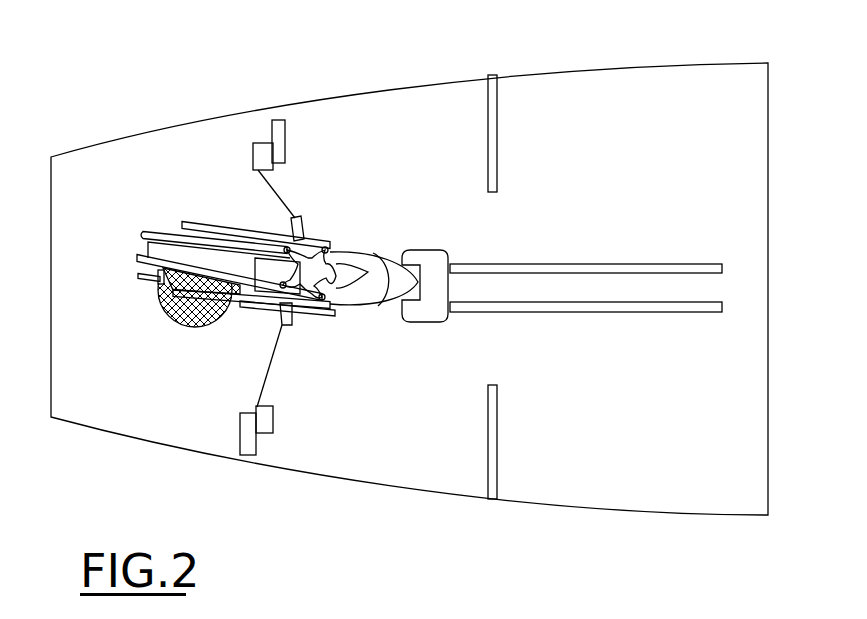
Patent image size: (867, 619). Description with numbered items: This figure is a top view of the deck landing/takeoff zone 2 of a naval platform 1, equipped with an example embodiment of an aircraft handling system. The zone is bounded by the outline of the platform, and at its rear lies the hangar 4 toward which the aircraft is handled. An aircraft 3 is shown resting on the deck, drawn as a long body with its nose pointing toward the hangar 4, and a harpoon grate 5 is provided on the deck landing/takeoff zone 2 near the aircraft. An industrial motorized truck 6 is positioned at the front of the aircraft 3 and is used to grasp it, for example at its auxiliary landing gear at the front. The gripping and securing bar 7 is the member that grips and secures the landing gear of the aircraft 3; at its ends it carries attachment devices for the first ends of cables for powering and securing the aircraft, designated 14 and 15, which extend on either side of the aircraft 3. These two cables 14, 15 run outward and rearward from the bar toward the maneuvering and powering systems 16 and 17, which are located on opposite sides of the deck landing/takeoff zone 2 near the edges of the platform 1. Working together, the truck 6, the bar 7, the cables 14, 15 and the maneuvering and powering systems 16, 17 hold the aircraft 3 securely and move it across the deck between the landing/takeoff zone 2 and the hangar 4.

The naval platform 1 is at (128, 103).
The deck landing/takeoff zone 2 is at (367, 275).
The aircraft 3 is at (354, 312).
The hangar 4 is at (602, 135).
The harpoon grate 5 is at (176, 329).
The industrial motorized truck 6 is at (438, 243).
The gripping and securing bar 7 is at (318, 216).
The cable for powering and securing the aircraft 14 is at (289, 194).
The cable for powering and securing the aircraft 15 is at (277, 372).
The maneuvering and powering system 16 is at (250, 128).
The maneuvering and powering system 17 is at (224, 434).